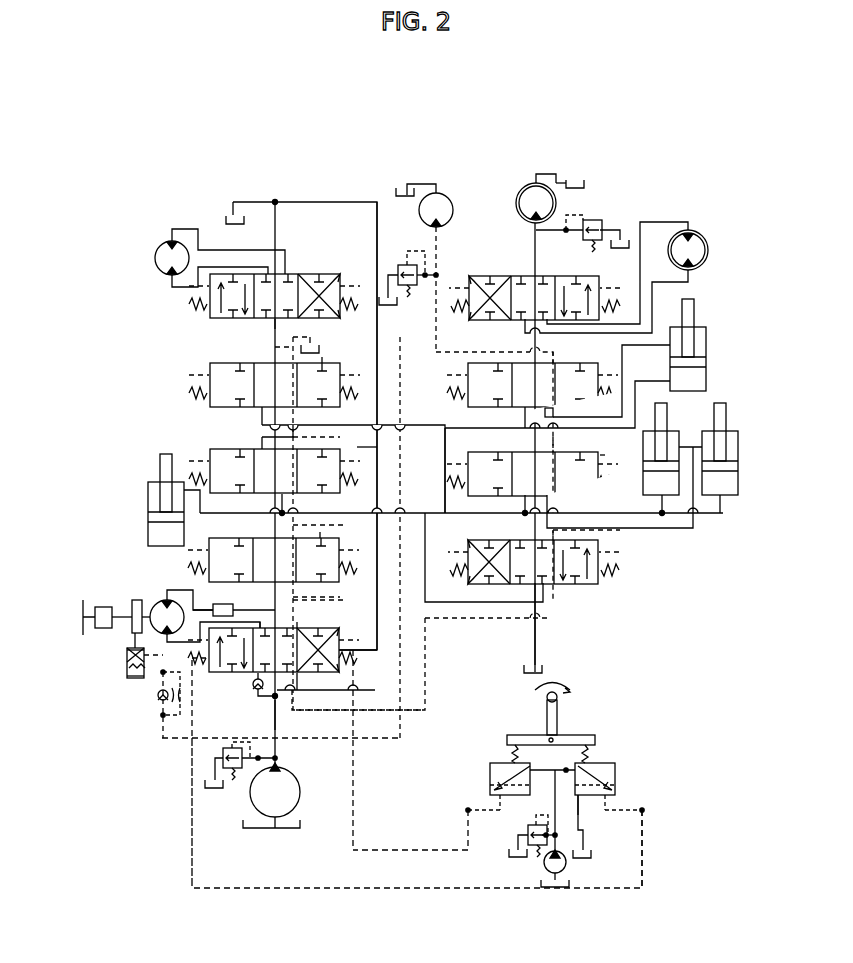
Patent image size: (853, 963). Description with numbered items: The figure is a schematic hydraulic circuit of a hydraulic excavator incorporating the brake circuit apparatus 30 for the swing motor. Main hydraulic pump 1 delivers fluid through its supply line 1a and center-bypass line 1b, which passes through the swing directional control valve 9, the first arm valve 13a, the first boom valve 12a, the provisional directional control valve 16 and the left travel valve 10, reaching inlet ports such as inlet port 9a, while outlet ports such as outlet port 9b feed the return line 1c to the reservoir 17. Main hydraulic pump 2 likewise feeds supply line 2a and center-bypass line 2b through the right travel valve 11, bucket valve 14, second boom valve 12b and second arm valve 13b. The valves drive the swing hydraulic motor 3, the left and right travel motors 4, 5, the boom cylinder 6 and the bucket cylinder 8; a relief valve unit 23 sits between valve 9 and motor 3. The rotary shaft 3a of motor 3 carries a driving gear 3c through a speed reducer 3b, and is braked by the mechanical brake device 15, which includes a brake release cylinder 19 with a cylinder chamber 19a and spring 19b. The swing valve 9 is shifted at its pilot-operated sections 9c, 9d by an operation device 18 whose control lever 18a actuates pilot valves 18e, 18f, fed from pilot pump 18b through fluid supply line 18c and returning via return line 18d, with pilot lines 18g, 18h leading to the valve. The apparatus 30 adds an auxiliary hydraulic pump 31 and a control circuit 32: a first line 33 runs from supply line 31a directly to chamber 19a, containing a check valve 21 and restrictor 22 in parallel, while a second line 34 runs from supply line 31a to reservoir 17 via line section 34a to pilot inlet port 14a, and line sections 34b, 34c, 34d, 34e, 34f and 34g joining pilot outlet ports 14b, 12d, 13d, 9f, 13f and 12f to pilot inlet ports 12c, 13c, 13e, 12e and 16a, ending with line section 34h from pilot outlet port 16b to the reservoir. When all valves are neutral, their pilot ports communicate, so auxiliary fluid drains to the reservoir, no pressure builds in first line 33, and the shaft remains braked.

The main hydraulic pump 1 is at (250, 785).
The fluid supply line 1a is at (275, 759).
The center-bypass line 1b is at (275, 332).
The return line 1c is at (377, 570).
The main hydraulic pump 2 is at (558, 201).
The supply line 2a is at (536, 233).
The center-bypass line 2b is at (535, 333).
The swing hydraulic motor 3 is at (162, 591).
The rotary shaft 3a is at (140, 599).
The speed reducer 3b is at (103, 607).
The driving gear 3c is at (83, 600).
The hydraulic motor 4 is at (153, 258).
The hydraulic motor 5 is at (708, 242).
The boom cylinder 6 is at (746, 484).
The bucket cylinder 8 is at (705, 327).
The directional control valve for swing 9 is at (338, 633).
The inlet port 9a is at (254, 678).
The outlet port 9b is at (258, 689).
The pilot-operated section 9c is at (200, 656).
The pilot-operated section 9d is at (350, 650).
The pilot outlet port 9f is at (293, 632).
The directional control valve 10 is at (320, 274).
The directional control valve 11 is at (587, 276).
The first directional control valve for boom 12a is at (377, 449).
The second directional control valve for boom 12b is at (600, 455).
The pilot inlet port 12c is at (530, 450).
The pilot outlet port 12d is at (555, 497).
The pilot inlet port 12e is at (300, 496).
The pilot outlet port 12f is at (262, 439).
The first directional control valve for arm 13a is at (330, 578).
The second directional control valve for arm 13b is at (598, 581).
The pilot inlet port 13c is at (552, 538).
The pilot outlet port 13d is at (547, 588).
The pilot inlet port 13e is at (316, 597).
The pilot outlet port 13f is at (320, 532).
The directional control valve for bucket 14 is at (585, 362).
The pilot inlet port 14a is at (553, 363).
The pilot outlet port 14b is at (527, 422).
The mechanical brake device 15 is at (67, 650).
The provisional directional control valve 16 is at (352, 373).
The pilot inlet port 16a is at (290, 408).
The pilot outlet port 16b is at (322, 363).
The reservoir 17 is at (214, 216).
The operation device 18 is at (627, 741).
The control lever 18a is at (577, 735).
The pilot pump 18b is at (547, 869).
The fluid supply line 18c is at (530, 812).
The return line 18d is at (578, 815).
The pilot valve 18e is at (615, 771).
The pilot valve 18f is at (490, 775).
The pilot line 18g is at (360, 888).
The pilot line 18h is at (393, 850).
The brake release cylinder 19 is at (130, 682).
The cylinder chamber 19a is at (127, 656).
The spring 19b is at (127, 674).
The check valve 21 is at (153, 698).
The restrictor 22 is at (185, 697).
The relief valve unit 23 is at (240, 597).
The brake circuit apparatus 30 is at (174, 768).
The auxiliary hydraulic pump 31 is at (452, 205).
The hydraulic fluid supply line 31a is at (438, 285).
The control circuit 32 is at (476, 638).
The first line 33 is at (400, 378).
The second line 34 is at (423, 710).
The line section 34a is at (450, 350).
The line section 34b is at (553, 436).
The line section 34c is at (602, 542).
The line section 34d is at (421, 661).
The line section 34e is at (330, 601).
The line section 34f is at (320, 522).
The line section 34g is at (316, 437).
The line section 34h is at (293, 347).